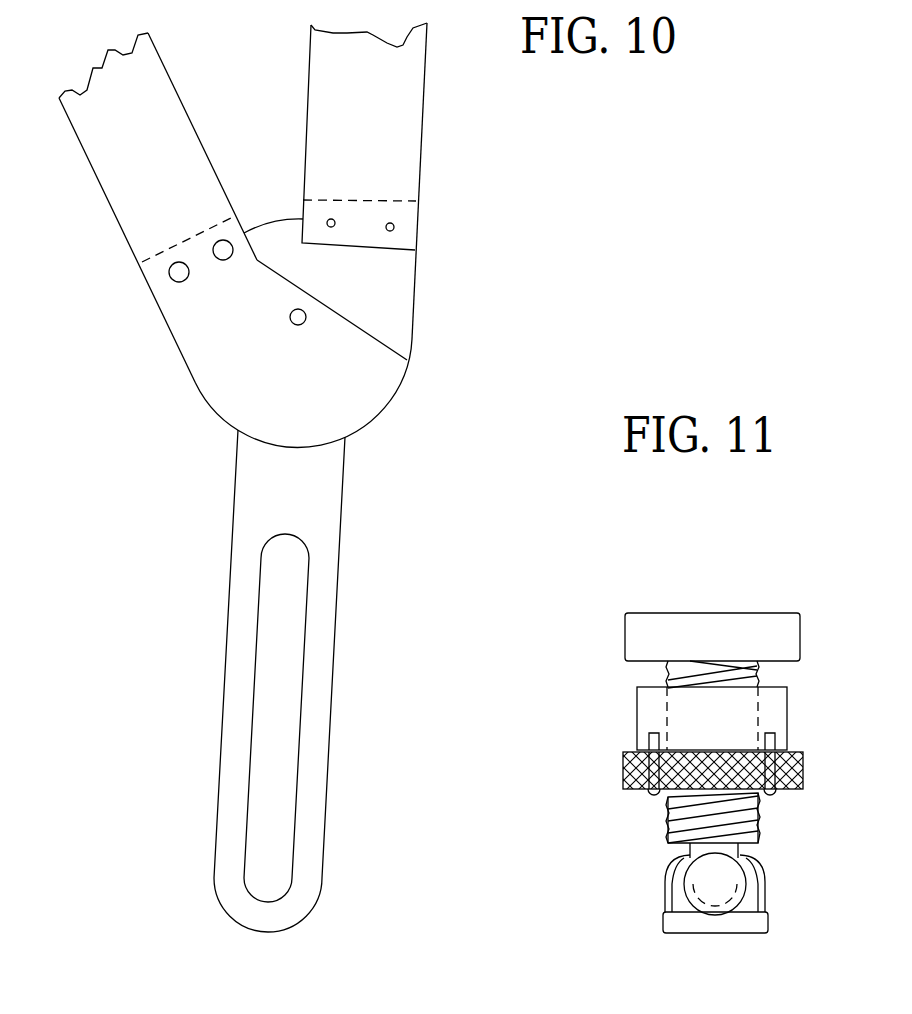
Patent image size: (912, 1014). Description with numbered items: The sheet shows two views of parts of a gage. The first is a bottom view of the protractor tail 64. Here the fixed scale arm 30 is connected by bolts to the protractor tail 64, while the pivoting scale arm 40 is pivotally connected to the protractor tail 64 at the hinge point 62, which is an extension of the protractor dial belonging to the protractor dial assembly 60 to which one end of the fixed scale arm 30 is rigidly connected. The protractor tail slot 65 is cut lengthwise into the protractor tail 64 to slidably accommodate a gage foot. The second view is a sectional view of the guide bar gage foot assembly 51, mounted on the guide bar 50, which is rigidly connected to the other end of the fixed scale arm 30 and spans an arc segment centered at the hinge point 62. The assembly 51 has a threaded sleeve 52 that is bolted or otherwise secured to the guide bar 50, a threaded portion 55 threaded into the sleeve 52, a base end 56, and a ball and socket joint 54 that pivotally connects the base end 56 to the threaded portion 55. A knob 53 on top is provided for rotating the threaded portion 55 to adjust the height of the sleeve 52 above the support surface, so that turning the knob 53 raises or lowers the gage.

In FIG. 10, the fixed scale arm 30 is at (407, 113).
In FIG. 10, the pivoting scale arm 40 is at (108, 178).
In FIG. 10, the protractor dial assembly 60 is at (352, 455).
In FIG. 10, the hinge point 62 is at (290, 315).
In FIG. 10, the protractor tail 64 is at (260, 488).
In FIG. 10, the protractor tail slot 65 is at (270, 788).
In FIG. 11, the guide bar 50 is at (803, 775).
In FIG. 11, the guide bar gage foot assembly 51 is at (794, 705).
In FIG. 11, the threaded sleeve 52 is at (650, 720).
In FIG. 11, the knob 53 is at (643, 615).
In FIG. 11, the ball and socket joint 54 is at (740, 880).
In FIG. 11, the threaded portion 55 is at (668, 817).
In FIG. 11, the base end 56 is at (673, 912).